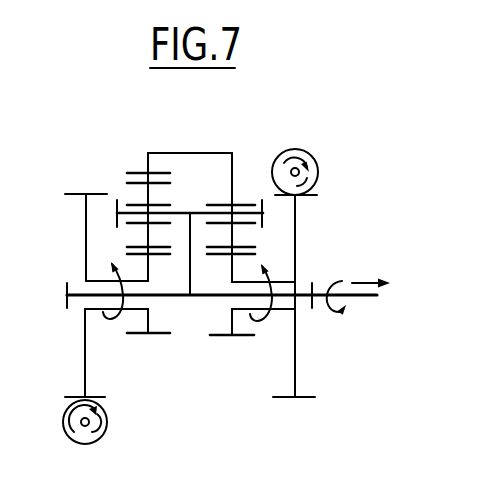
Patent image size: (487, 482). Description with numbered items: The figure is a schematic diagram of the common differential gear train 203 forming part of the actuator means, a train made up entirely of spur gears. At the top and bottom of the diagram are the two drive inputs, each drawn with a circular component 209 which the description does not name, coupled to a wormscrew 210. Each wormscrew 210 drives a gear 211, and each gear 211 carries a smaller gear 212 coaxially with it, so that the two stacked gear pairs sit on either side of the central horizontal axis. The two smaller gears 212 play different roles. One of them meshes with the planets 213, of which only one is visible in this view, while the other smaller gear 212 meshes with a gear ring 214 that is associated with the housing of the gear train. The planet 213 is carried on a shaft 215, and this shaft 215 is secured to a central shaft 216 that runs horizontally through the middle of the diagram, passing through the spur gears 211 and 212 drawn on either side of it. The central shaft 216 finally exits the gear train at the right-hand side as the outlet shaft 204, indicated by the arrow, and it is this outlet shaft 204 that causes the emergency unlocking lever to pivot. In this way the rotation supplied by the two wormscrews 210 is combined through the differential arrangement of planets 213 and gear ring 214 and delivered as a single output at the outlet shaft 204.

The common differential gear train 203 is at (126, 158).
The outlet shaft 204 is at (367, 303).
The electric motor 209 is at (285, 149).
The wormscrew 210 is at (304, 152).
The gear 211 is at (84, 344).
The smaller gear 212 is at (230, 318).
The planet 213 is at (122, 177).
The gear ring 214 is at (176, 153).
The shaft 215 is at (202, 211).
The central shaft 216 is at (170, 294).